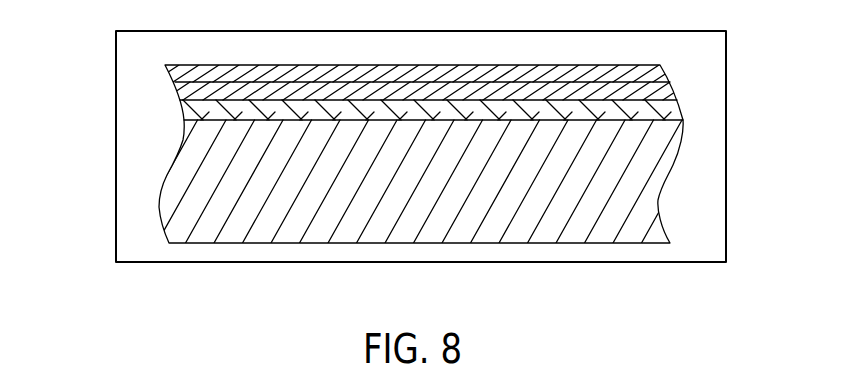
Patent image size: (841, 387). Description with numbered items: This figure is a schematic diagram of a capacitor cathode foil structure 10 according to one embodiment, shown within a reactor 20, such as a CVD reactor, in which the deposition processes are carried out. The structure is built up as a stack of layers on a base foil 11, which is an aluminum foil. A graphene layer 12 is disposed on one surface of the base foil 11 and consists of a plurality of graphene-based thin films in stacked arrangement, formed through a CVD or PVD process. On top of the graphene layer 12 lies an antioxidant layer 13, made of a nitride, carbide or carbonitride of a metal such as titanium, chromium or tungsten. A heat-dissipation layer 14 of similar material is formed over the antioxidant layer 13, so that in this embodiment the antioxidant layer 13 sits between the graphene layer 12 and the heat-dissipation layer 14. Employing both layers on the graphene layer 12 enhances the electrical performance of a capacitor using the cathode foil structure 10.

The reactor 20 is at (116, 82).
The capacitor cathode foil structure 10 is at (458, 145).
The base foil 11 is at (436, 181).
The graphene layer 12 is at (683, 119).
The antioxidant layer 13 is at (670, 88).
The heat-dissipation layer 14 is at (667, 68).